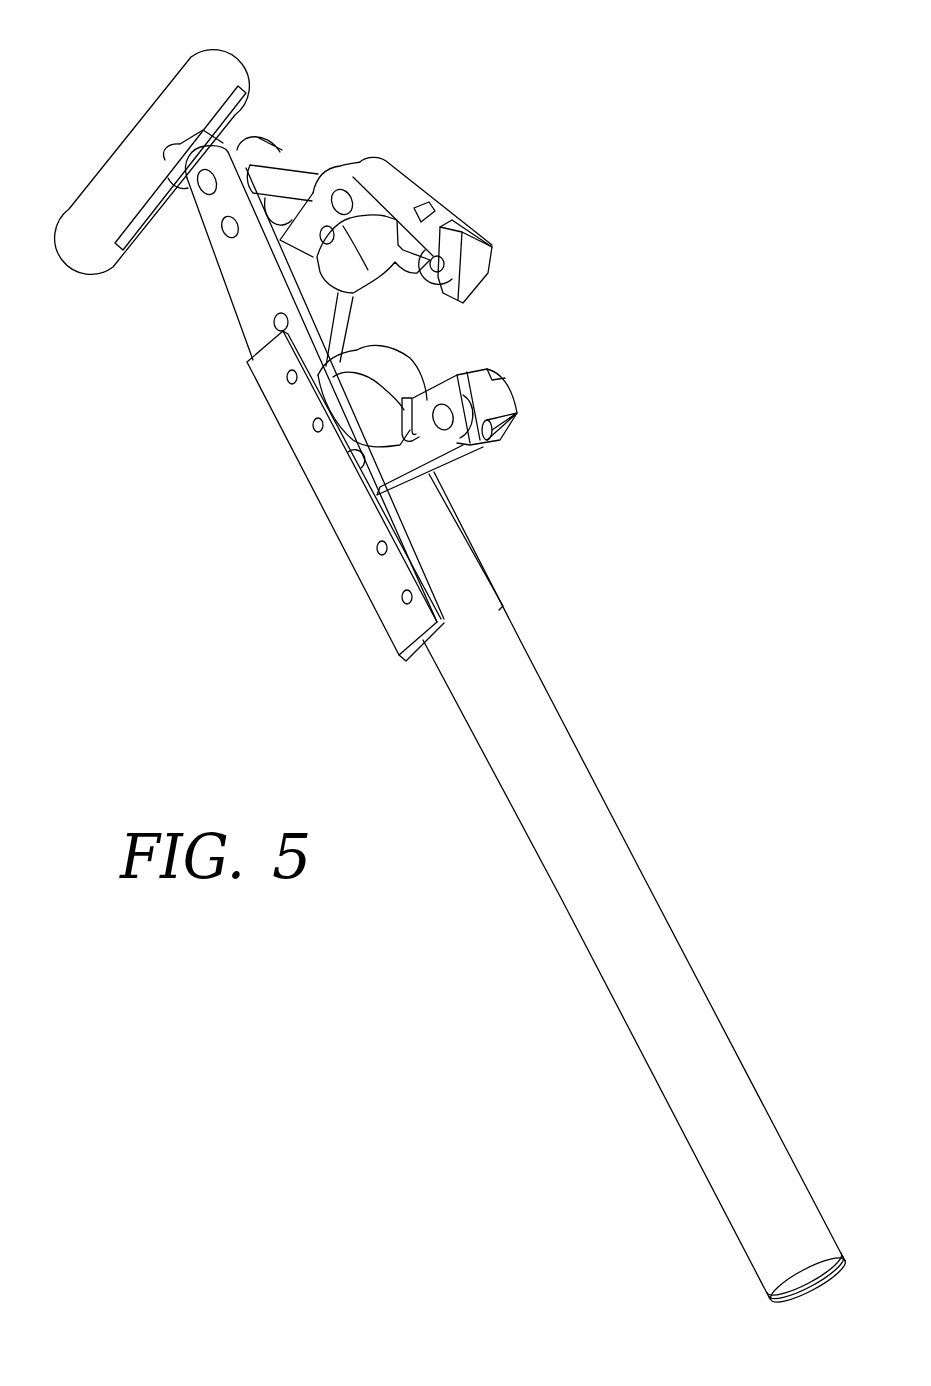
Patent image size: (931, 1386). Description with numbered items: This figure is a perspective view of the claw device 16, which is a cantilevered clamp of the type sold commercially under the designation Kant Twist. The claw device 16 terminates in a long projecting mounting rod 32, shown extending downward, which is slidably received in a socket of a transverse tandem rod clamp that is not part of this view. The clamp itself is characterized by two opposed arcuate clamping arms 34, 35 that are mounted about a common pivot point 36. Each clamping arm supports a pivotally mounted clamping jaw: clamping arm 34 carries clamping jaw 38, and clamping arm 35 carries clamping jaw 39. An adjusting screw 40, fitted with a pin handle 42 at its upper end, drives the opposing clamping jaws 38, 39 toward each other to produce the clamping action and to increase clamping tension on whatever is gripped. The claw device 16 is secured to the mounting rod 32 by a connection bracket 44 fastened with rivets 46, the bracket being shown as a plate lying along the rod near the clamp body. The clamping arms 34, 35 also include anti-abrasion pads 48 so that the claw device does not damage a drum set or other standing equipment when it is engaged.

The claw device 16 is at (438, 130).
The mounting rod 32 is at (693, 1007).
The clamping arm 34 is at (403, 188).
The clamping arm 35 is at (490, 447).
The pivot point 36 is at (273, 322).
The clamping jaw 38 is at (500, 257).
The clamping jaw 39 is at (487, 395).
The adjusting screw 40 is at (298, 150).
The pin handle 42 is at (213, 72).
The connection bracket 44 is at (323, 473).
The rivets 46 is at (403, 597).
The anti-abrasion pads 48 is at (425, 363).